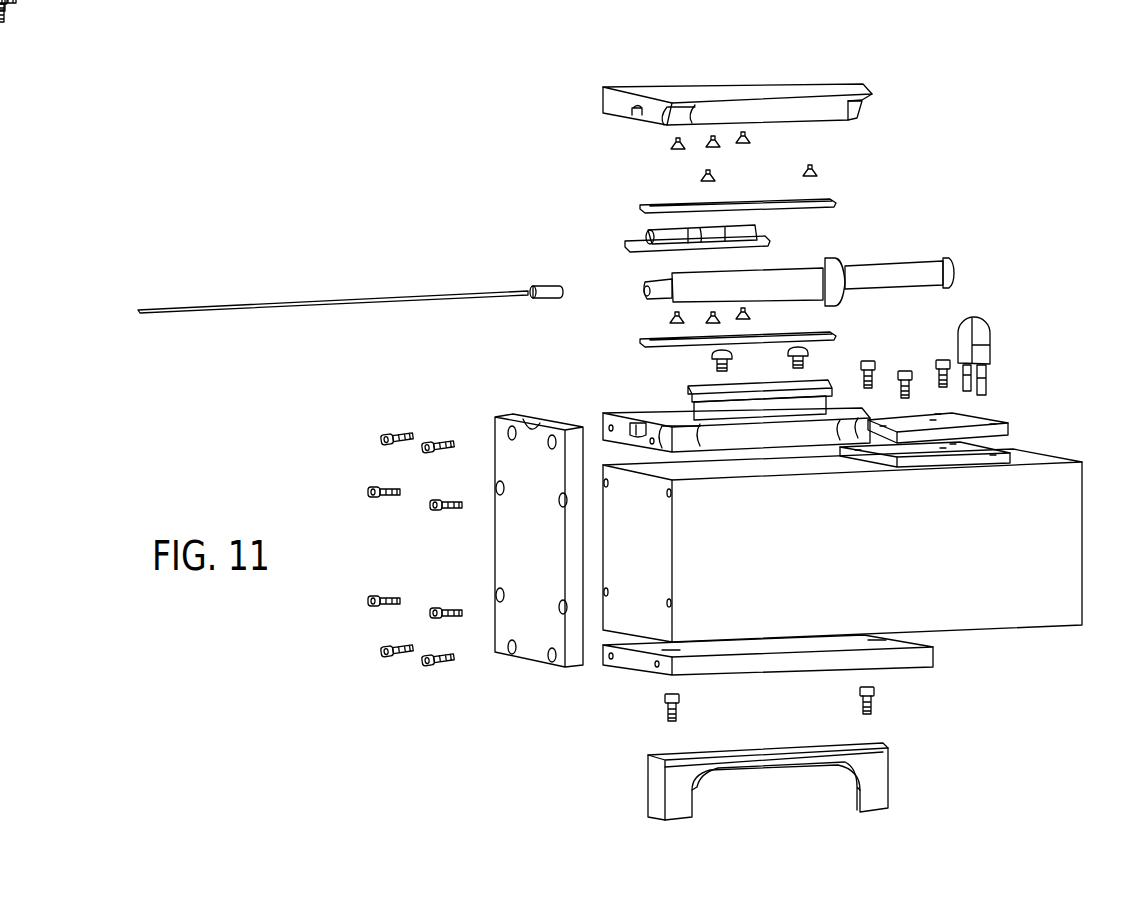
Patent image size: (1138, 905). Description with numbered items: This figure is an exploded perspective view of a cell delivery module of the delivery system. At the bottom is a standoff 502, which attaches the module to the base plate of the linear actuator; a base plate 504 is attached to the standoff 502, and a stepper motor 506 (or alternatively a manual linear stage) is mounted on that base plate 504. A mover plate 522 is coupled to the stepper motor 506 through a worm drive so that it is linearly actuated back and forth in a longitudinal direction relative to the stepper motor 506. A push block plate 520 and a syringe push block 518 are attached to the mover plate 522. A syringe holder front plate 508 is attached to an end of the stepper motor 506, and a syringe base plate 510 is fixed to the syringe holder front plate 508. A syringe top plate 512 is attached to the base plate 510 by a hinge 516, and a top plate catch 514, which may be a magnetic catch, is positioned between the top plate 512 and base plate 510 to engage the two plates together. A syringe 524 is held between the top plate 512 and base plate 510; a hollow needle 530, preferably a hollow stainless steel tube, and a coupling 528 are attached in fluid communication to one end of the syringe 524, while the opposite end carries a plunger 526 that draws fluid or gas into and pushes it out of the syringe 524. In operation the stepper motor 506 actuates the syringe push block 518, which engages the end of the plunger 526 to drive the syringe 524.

The standoff 502 is at (877, 775).
The base plate 504 is at (930, 652).
The stepper motor 506 is at (1070, 540).
The syringe holder front plate 508 is at (515, 563).
The syringe base plate 510 is at (640, 413).
The syringe top plate 512 is at (775, 86).
The top plate catch 514 is at (823, 381).
The hinge 516 is at (663, 233).
The syringe push block 518 is at (977, 311).
The push block plate 520 is at (997, 420).
The mover plate 522 is at (1020, 453).
The syringe 524 is at (788, 273).
The plunger 526 is at (908, 275).
The coupling 528 is at (547, 288).
The hollow needle 530 is at (352, 297).